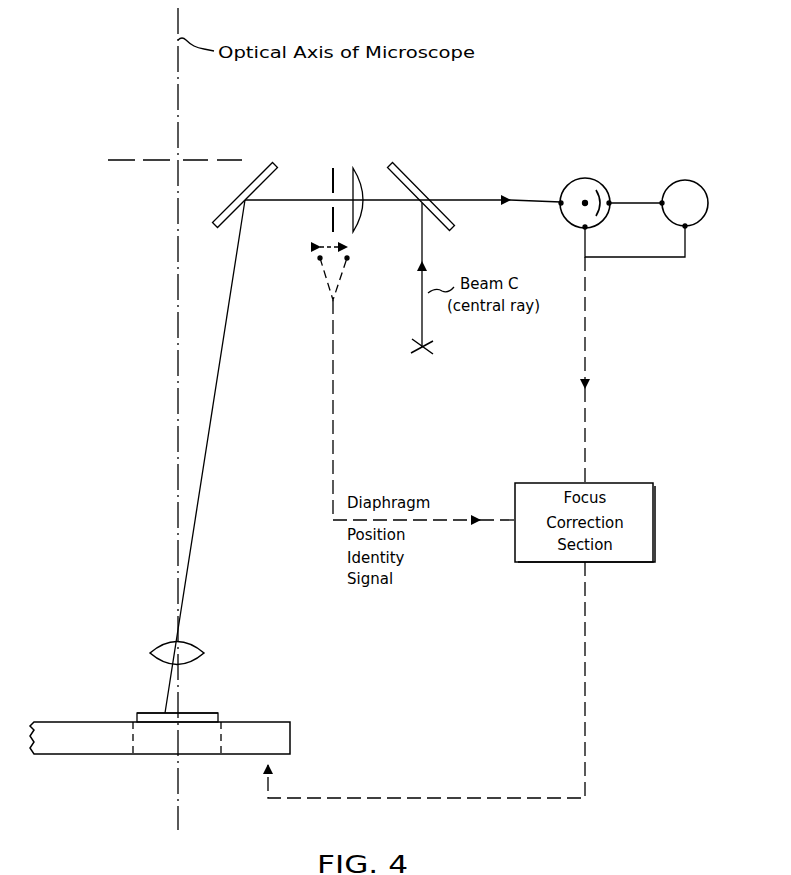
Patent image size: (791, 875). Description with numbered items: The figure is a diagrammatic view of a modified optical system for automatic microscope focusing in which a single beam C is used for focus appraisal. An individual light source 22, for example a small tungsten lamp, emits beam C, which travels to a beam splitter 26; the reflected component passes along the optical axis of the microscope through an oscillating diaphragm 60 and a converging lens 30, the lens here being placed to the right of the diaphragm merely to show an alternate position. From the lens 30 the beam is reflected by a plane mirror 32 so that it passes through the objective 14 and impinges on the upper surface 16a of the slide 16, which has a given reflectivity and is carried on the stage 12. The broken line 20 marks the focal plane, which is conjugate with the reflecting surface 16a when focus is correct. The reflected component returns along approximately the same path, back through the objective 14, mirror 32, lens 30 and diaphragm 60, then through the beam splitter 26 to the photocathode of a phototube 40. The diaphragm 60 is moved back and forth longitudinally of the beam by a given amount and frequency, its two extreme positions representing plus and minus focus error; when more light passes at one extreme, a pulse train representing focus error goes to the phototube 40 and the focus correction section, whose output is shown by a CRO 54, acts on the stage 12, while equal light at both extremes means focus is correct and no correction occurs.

The stage 12 is at (76, 744).
The objective 14 is at (203, 650).
The slide 16 is at (218, 718).
The upper surface of slide 16a is at (149, 713).
The focal plane 20 is at (121, 161).
The light source 22 is at (433, 348).
The beam splitter 26 is at (404, 174).
The converging lens 30 is at (360, 174).
The plane mirror 32 is at (278, 168).
The phototube 40 is at (583, 179).
The cathode ray oscilloscope 54 is at (690, 180).
The oscillating diaphragm 60 is at (331, 179).